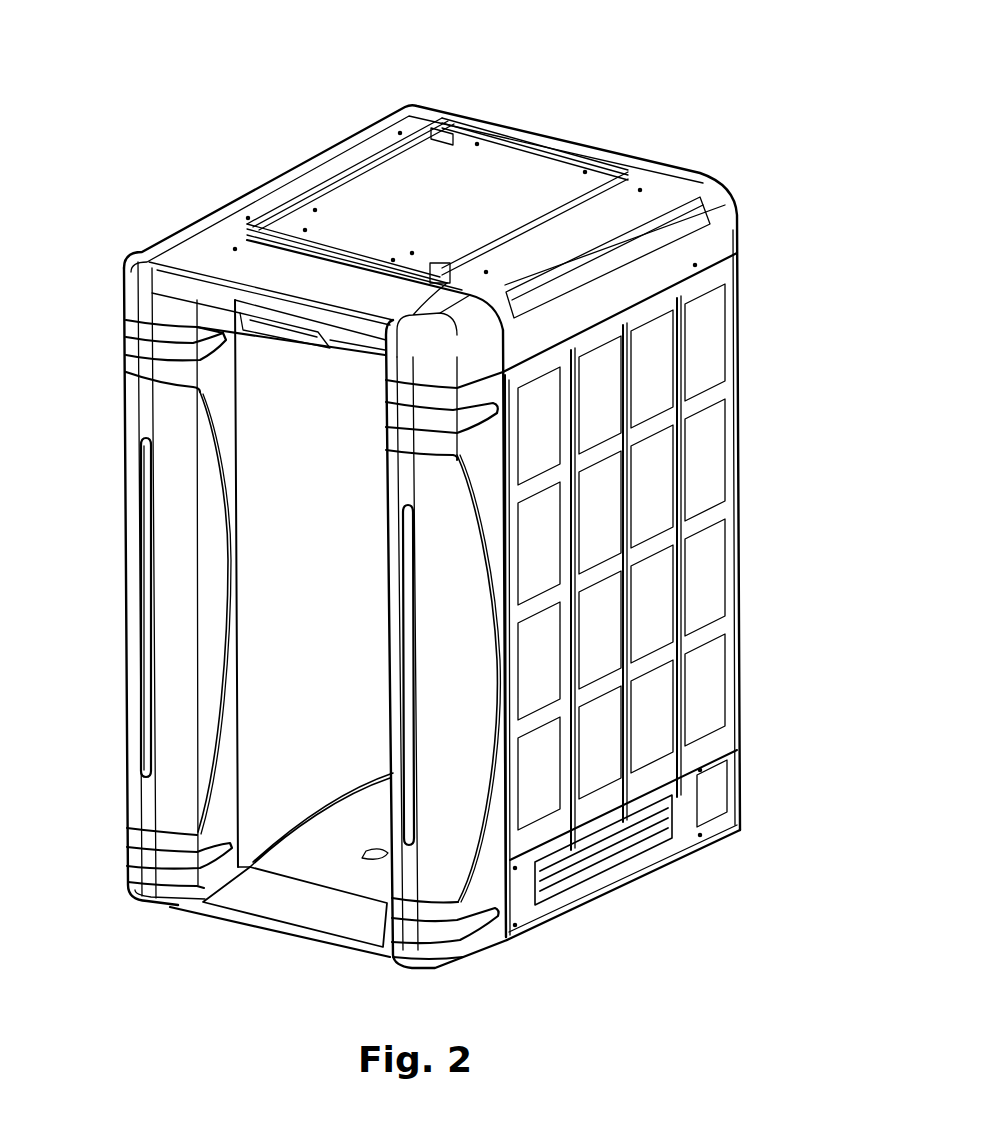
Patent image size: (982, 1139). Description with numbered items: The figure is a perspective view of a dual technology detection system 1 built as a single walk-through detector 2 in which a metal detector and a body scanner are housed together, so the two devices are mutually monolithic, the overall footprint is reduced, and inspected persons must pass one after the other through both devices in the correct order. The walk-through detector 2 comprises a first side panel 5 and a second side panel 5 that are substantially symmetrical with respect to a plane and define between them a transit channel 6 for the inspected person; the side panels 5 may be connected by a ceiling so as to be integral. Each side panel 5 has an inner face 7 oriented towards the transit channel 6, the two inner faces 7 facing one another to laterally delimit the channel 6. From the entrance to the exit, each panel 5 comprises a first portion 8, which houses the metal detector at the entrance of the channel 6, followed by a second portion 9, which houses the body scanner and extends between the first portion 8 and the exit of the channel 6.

The dual technology detection system 1 is at (676, 100).
The walk-through detector 2 is at (730, 232).
The side panel 5 is at (156, 415).
The transit channel 6 is at (281, 865).
The inner face 7 is at (310, 426).
The first portion 8 is at (212, 563).
The second portion 9 is at (290, 688).